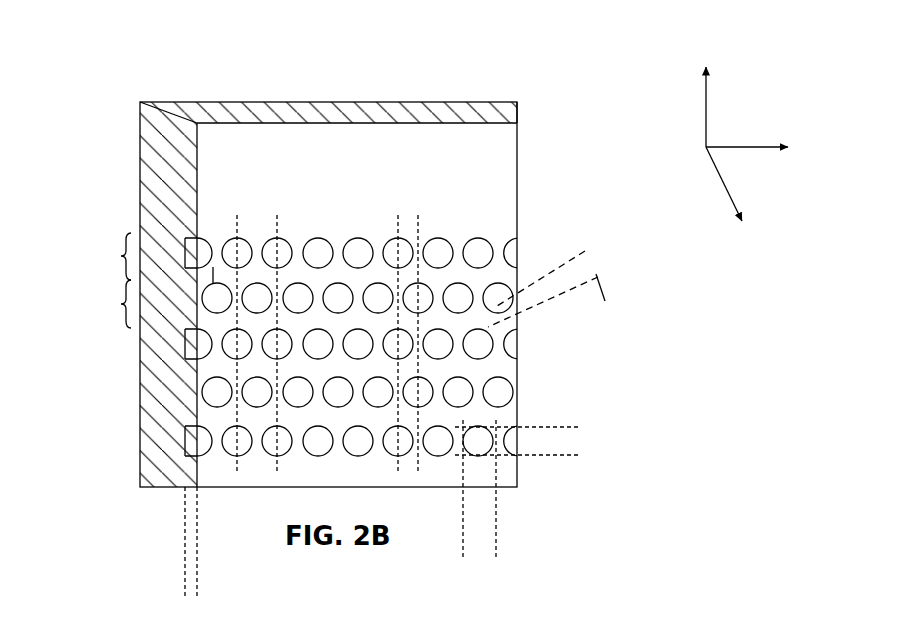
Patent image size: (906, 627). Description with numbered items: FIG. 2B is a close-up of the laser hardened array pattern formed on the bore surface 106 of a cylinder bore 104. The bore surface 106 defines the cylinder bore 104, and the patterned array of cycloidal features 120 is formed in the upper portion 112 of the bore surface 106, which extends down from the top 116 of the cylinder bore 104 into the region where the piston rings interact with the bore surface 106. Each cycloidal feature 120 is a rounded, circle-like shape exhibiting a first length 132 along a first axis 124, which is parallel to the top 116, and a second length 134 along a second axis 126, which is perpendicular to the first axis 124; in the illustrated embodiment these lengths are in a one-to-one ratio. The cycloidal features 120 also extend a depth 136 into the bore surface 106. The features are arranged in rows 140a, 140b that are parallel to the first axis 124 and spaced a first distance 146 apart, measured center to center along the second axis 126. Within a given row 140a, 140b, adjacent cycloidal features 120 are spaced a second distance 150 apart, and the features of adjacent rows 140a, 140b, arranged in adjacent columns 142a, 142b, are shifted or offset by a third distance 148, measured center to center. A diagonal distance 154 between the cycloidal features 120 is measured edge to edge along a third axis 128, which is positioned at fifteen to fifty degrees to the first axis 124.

The cylinder bore 104 is at (186, 49).
The bore surface 106 is at (368, 124).
The upper portion 112 is at (136, 423).
The top 116 is at (467, 102).
The cycloidal features 120 is at (476, 247).
The first axis 124 is at (748, 143).
The second axis 126 is at (703, 106).
The third axis 128 is at (720, 186).
The first length 132 is at (437, 523).
The second length 134 is at (535, 478).
The depth 136 is at (225, 588).
The row 140a is at (98, 256).
The row 140b is at (98, 304).
The column 142a is at (235, 221).
The column 142b is at (300, 221).
The first distance 146 is at (213, 255).
The third distance 148 is at (445, 221).
The second distance 150 is at (304, 219).
The diagonal distance 154 is at (584, 250).